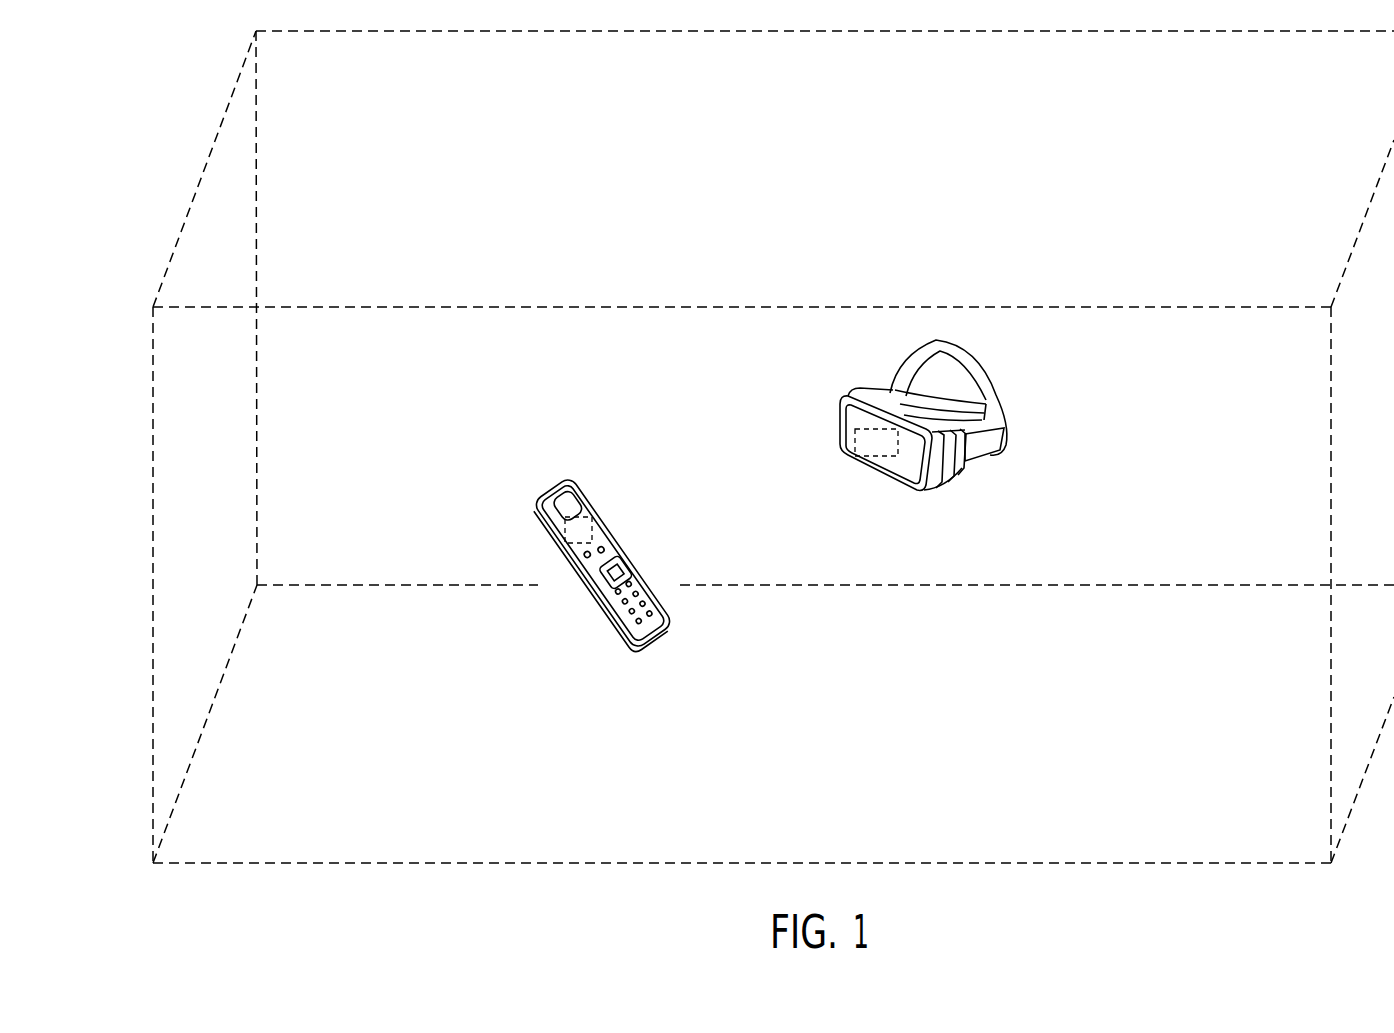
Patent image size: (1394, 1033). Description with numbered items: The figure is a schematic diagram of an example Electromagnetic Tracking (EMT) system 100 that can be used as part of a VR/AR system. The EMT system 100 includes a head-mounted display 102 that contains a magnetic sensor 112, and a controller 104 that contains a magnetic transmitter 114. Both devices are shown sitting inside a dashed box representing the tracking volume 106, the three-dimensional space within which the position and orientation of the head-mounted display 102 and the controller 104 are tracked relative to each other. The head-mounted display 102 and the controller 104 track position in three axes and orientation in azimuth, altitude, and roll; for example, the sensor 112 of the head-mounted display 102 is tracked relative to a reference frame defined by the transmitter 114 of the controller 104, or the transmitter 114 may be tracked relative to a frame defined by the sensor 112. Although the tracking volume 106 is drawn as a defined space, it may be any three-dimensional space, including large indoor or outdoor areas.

The EMT system 100 is at (163, 108).
The head-mounted display 102 is at (1003, 410).
The controller 104 is at (533, 500).
The tracking volume 106 is at (185, 227).
The magnetic sensor 112 is at (853, 440).
The magnetic transmitter 114 is at (592, 530).